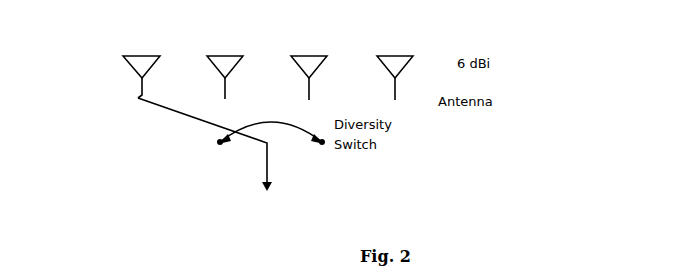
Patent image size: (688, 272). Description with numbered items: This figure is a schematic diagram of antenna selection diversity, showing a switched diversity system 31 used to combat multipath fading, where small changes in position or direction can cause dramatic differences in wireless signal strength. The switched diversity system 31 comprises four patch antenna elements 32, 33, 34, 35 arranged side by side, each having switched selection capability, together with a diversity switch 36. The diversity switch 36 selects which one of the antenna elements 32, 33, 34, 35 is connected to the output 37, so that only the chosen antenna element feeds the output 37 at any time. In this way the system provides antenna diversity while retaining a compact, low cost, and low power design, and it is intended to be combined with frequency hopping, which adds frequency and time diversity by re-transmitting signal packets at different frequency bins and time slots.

The switched diversity system 31 is at (15, 24).
The antenna element 32 is at (141, 65).
The antenna element 33 is at (225, 66).
The antenna element 34 is at (309, 66).
The antenna element 35 is at (395, 66).
The diversity switch 36 is at (271, 121).
The output 37 is at (218, 148).